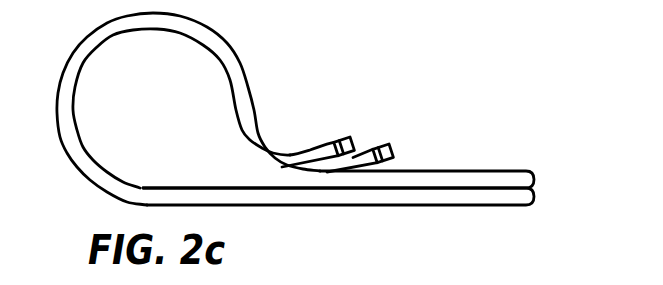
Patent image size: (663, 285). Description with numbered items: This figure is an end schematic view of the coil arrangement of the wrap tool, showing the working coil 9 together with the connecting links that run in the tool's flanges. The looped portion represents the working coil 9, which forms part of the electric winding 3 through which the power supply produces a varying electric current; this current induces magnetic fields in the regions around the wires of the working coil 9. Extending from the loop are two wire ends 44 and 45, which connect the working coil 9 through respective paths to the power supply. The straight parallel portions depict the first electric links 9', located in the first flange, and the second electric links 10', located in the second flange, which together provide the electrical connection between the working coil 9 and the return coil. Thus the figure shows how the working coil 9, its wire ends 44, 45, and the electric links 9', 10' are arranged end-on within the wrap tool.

The electric winding 3 is at (295, 141).
The working coil 9 is at (188, 109).
The first electric links 9' is at (338, 217).
The second electric links 10' is at (338, 149).
The wire end 44 is at (370, 147).
The wire end 45 is at (333, 141).